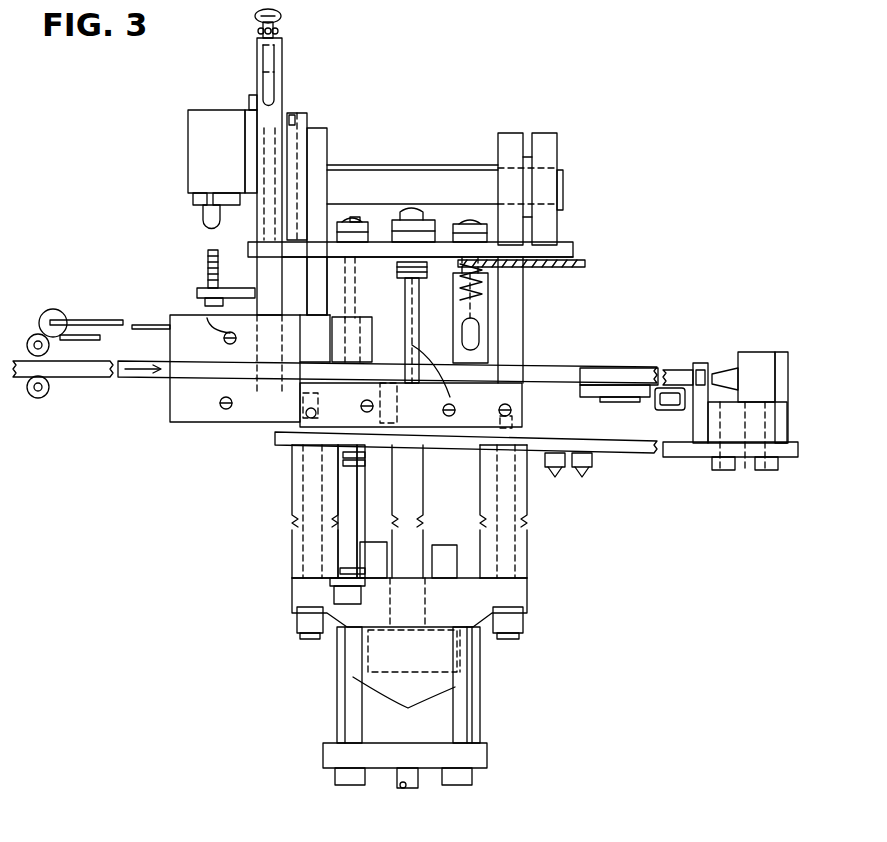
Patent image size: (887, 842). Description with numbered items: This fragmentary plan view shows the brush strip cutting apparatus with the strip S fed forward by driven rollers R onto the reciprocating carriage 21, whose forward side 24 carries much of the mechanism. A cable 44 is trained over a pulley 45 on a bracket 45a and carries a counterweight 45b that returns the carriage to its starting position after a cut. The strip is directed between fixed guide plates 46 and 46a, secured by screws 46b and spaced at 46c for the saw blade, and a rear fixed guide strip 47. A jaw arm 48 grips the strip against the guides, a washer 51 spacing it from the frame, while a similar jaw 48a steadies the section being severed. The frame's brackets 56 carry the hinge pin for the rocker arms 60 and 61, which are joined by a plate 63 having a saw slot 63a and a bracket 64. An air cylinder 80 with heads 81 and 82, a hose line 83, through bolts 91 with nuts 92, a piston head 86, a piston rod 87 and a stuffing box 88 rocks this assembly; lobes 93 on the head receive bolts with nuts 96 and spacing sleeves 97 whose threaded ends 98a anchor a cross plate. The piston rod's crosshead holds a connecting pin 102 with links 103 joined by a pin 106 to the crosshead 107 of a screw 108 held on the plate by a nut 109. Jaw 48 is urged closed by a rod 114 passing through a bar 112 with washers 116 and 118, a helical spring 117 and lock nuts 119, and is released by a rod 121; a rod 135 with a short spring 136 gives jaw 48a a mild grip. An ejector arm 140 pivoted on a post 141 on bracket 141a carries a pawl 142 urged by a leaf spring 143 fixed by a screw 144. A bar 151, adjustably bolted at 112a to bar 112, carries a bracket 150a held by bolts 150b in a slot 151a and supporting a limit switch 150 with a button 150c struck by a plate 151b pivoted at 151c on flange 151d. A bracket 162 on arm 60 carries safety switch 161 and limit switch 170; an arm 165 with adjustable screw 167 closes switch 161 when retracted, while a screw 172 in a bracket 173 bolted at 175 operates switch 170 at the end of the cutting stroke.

The adjustable screw 167 is at (259, 30).
The arm 165 is at (282, 53).
The arm 60 is at (285, 229).
The safety switch 161 is at (247, 97).
The limit switch 170 is at (188, 196).
The bracket 162 is at (300, 114).
The brackets 56 is at (322, 128).
The arm 61 is at (551, 226).
The plate 63 is at (573, 249).
The bracket 64 is at (585, 266).
The rod 121 is at (350, 222).
The nut 109 is at (395, 270).
The screw 108 is at (414, 212).
The slot 63a is at (433, 246).
The rod 135 is at (470, 224).
The helical spring 136 is at (490, 280).
The crosshead 107 is at (397, 277).
The pin 106 is at (420, 310).
The jaw arm 48 is at (362, 322).
The jaw 48a is at (488, 304).
The washer 51 is at (495, 332).
The side 24 is at (520, 332).
The rear fixed guide strip 47 is at (197, 322).
The cable 44 is at (146, 325).
The pulley 45 is at (82, 320).
The counterweight 45b is at (53, 309).
The bracket 45a is at (100, 339).
The driven rollers R is at (22, 360).
The brush strip S is at (78, 378).
The carriage 21 is at (188, 430).
The screws 46b is at (222, 410).
The guide plate 46 is at (258, 428).
The spacing 46c is at (380, 416).
The guide plate 46a is at (460, 428).
The connecting pin 102 is at (388, 403).
The links 103 is at (449, 378).
The bolts 175 is at (302, 404).
The threaded bolt ends 98a is at (305, 413).
The bar 112 is at (290, 449).
The adjustable bolting 112a is at (555, 468).
The bar 151 is at (666, 478).
The bolts 150b is at (722, 472).
The slot 151a is at (768, 470).
The limit switch 150 is at (757, 377).
The bracket 150a is at (779, 352).
The coupling 150c is at (722, 370).
The plate 151b is at (697, 363).
The pivot 151c is at (703, 362).
The bracket flange 151d is at (709, 419).
The pawl 142 is at (668, 370).
The ejector arm 140 is at (620, 369).
The post 141 is at (590, 369).
The bracket 141a is at (560, 350).
The screw 144 is at (600, 404).
The leaf spring 143 is at (672, 411).
The spacing sleeves 97 is at (528, 520).
The rod 114 is at (345, 496).
The helical spring 117 is at (340, 460).
The washer 116 is at (375, 511).
The washer 118 is at (335, 571).
The lock nuts 119 is at (336, 598).
The nuts 96 is at (297, 620).
The lobes 93 is at (527, 599).
The piston rod 87 is at (424, 519).
The stuffing box 88 is at (455, 560).
The air cylinder 80 is at (370, 708).
The through bolts 91 is at (345, 731).
The cylinder head 82 is at (440, 628).
The piston head 86 is at (468, 679).
The cylinder head 81 is at (487, 754).
The nuts 92 is at (472, 780).
The hose line 83 is at (413, 783).
The adjustable screw 172 is at (206, 256).
The bracket 173 is at (200, 290).